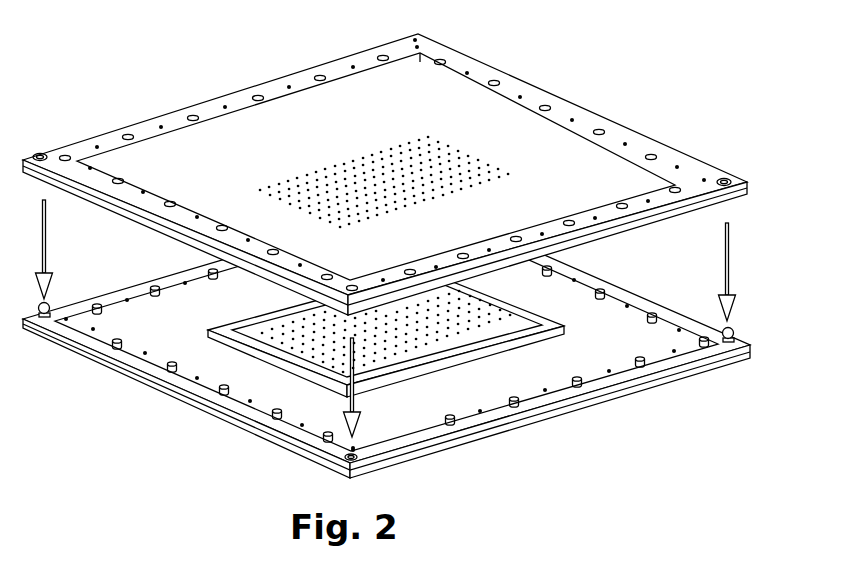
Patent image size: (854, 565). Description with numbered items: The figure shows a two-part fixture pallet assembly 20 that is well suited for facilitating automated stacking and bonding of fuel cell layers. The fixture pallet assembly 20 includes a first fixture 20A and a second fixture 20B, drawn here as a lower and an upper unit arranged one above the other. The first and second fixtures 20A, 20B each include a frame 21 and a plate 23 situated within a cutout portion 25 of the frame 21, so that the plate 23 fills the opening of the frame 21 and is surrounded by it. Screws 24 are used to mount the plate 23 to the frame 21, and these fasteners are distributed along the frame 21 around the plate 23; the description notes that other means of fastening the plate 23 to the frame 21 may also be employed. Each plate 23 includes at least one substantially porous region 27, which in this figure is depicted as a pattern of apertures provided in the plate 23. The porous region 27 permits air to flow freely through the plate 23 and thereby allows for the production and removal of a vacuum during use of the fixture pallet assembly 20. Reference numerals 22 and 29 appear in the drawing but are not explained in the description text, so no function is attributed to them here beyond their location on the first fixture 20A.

The fixture pallet assembly 20 is at (416, 246).
The first fixture 20A is at (416, 339).
The second fixture 20B is at (404, 167).
The frame 21 is at (123, 127).
The alignment ball pins 22 is at (735, 330).
The plate 23 is at (408, 110).
The screws 24 is at (118, 346).
The cutout portion 25 is at (288, 108).
The porous region 27 is at (434, 163).
The raised platform 29 is at (262, 352).